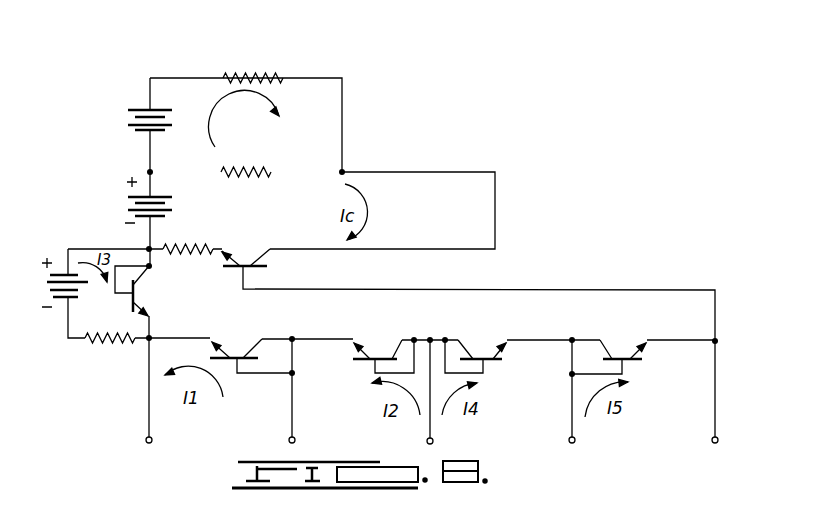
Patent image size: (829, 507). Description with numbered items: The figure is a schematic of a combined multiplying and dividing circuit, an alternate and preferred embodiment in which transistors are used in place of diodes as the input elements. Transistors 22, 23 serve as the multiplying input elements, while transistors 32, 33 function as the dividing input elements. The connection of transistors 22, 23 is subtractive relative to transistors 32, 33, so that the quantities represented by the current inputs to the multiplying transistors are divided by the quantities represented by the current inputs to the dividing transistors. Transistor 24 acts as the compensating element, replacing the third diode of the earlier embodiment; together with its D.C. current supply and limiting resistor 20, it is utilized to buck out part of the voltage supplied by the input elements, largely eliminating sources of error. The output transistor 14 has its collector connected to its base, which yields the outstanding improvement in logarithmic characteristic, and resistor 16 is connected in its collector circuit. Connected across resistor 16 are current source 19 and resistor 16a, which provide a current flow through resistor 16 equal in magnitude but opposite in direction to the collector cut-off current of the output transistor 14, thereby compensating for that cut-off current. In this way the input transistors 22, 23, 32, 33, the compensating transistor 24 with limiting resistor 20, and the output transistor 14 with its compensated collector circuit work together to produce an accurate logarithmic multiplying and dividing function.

The current source 19 is at (133, 110).
The resistor 16a is at (247, 76).
The resistor 16 is at (245, 170).
The output transistor 14 is at (262, 243).
The transistor 24 is at (188, 301).
The limiting resistor 20 is at (110, 345).
The transistor 23 is at (250, 338).
The transistor 22 is at (394, 340).
The transistor 32 is at (496, 340).
The transistor 33 is at (641, 340).